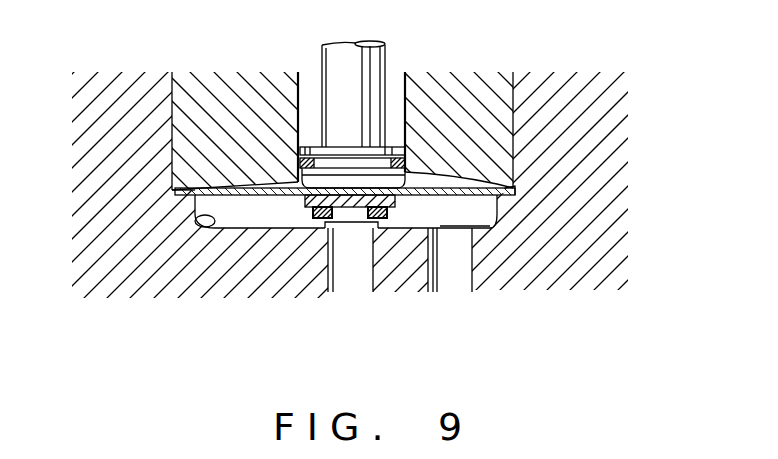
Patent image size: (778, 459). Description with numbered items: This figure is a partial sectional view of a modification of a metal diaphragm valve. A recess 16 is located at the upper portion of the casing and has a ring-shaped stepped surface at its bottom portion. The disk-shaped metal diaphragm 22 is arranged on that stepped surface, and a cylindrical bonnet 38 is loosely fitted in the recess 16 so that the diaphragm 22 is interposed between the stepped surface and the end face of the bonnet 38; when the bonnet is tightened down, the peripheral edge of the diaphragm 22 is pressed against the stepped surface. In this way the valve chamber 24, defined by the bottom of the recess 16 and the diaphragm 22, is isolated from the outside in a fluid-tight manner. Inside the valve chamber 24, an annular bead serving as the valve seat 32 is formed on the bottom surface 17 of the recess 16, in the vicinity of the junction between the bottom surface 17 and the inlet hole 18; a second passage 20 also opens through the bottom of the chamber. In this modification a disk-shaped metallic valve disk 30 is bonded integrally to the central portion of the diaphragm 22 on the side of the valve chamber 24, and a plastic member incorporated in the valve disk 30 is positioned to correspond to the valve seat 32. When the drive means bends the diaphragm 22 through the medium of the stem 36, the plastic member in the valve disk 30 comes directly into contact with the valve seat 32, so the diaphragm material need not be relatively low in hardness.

The recess 16 is at (505, 82).
The bottom surface 17 is at (193, 212).
The inlet hole 18 is at (353, 283).
The fluid passage 20 is at (460, 282).
The metal diaphragm 22 is at (490, 205).
The valve chamber 24 is at (485, 212).
The valve disk 30 is at (308, 207).
The valve seat 32 is at (323, 225).
The stem 36 is at (480, 168).
The bonnet 38 is at (183, 145).